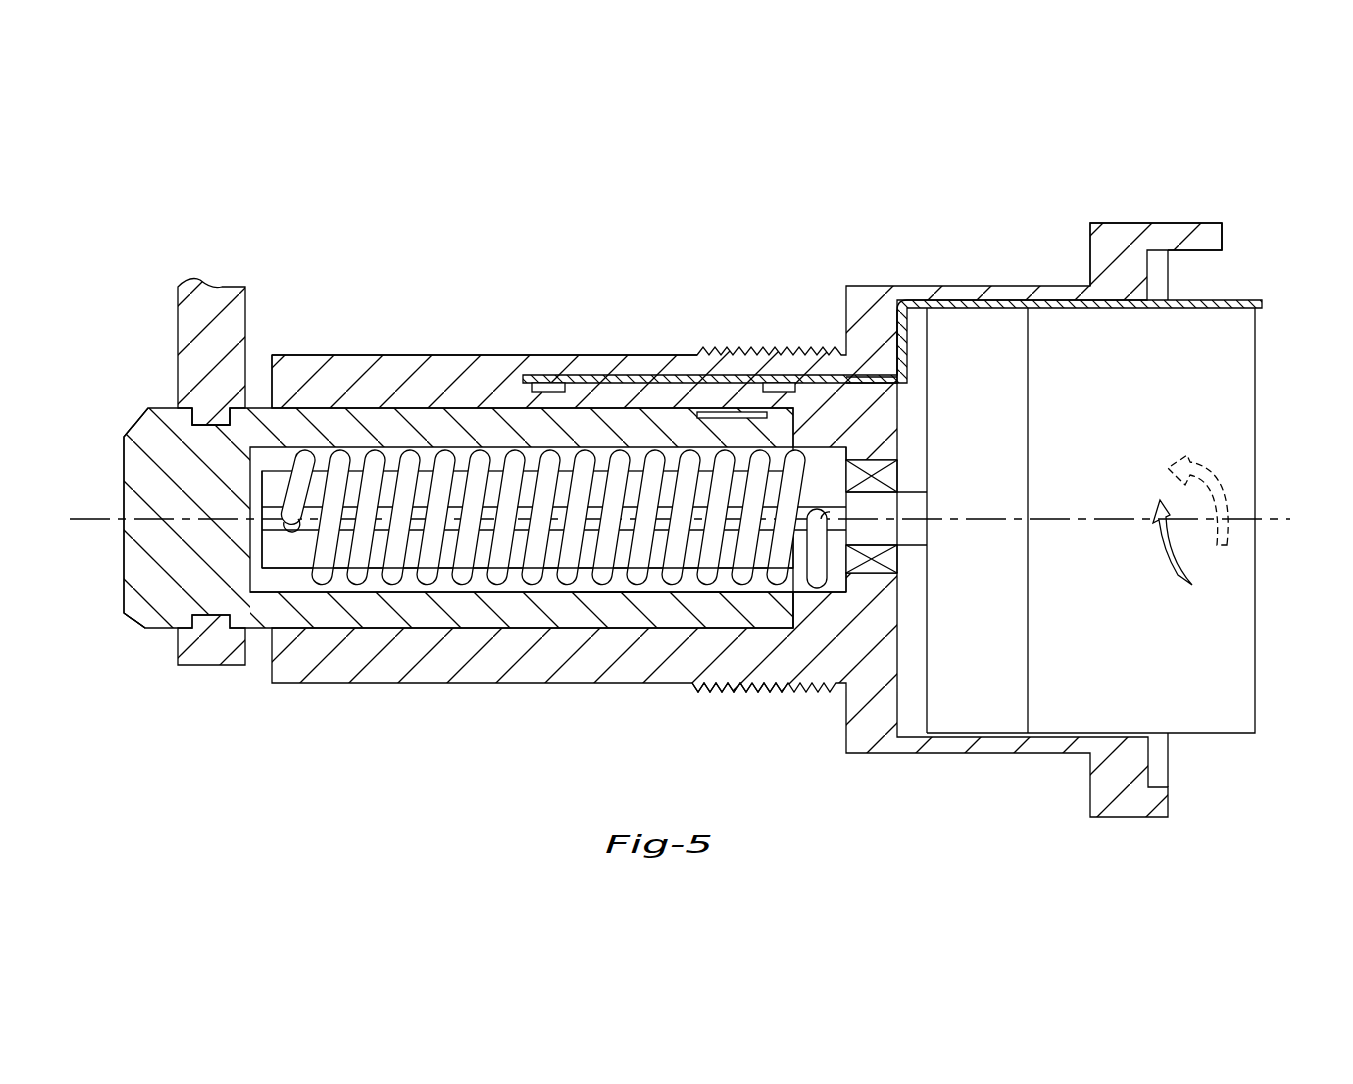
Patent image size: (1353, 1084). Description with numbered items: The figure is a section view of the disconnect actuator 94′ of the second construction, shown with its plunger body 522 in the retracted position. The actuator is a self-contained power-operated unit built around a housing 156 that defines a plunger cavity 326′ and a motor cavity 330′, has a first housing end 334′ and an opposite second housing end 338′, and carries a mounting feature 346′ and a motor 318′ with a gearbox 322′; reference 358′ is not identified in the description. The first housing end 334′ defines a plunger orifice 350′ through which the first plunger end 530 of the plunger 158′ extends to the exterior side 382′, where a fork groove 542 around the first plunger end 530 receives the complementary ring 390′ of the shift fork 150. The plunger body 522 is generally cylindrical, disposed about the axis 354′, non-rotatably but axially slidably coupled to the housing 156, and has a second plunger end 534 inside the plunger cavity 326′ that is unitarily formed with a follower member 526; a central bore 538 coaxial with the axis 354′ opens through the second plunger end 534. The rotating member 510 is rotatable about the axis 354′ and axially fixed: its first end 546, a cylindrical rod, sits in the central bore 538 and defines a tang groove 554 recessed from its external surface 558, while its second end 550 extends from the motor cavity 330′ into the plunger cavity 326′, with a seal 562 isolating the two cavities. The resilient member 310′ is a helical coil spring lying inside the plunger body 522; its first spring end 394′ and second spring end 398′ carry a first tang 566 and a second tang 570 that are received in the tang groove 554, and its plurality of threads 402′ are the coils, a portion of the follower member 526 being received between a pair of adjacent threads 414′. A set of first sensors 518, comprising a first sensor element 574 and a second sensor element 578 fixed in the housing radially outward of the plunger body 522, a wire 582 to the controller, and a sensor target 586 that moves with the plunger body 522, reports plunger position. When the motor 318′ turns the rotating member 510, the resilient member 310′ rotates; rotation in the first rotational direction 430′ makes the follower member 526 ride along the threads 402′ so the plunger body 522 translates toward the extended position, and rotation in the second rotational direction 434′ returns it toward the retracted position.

The disconnect actuator 94′ is at (302, 216).
The shift fork 150 is at (178, 296).
The housing 156 is at (1112, 222).
The plunger 158′ is at (143, 631).
The resilient member 310′ is at (829, 592).
The motor 318′ is at (1233, 387).
The gearbox 322′ is at (972, 337).
The plunger cavity 326′ is at (827, 457).
The motor cavity 330′ is at (918, 577).
The first housing end 334′ is at (310, 683).
The second housing end 338′ is at (1222, 228).
The mounting feature 346′ is at (768, 668).
The plunger orifice 350′ is at (312, 413).
The axis 354′ is at (84, 518).
The external threads 358′ is at (728, 690).
The exterior side 382′ is at (276, 378).
The complementary ring 390′ is at (175, 665).
The first spring end 394′ is at (295, 487).
The second spring end 398′ is at (818, 553).
The plurality of threads 402′ is at (733, 580).
The pair of adjacent threads 414′ is at (640, 585).
The first rotational direction 430′ is at (1168, 572).
The second rotational direction 434′ is at (1180, 448).
The rotating member 510 is at (270, 566).
The set of first sensors 518 is at (583, 380).
The plunger body 522 is at (282, 613).
The follower member 526 is at (637, 462).
The first plunger end 530 is at (124, 598).
The second plunger end 534 is at (808, 622).
The central bore 538 is at (243, 537).
The fork groove 542 is at (190, 432).
The first end 546 is at (260, 563).
The second end 550 is at (908, 512).
The tang groove 554 is at (453, 532).
The external surface 558 is at (408, 570).
The seal 562 is at (898, 475).
The first tang 566 is at (290, 517).
The second tang 570 is at (850, 460).
The first sensor element 574 is at (551, 385).
The second sensor element 578 is at (772, 387).
The wire 582 is at (918, 302).
The sensor target 586 is at (704, 410).